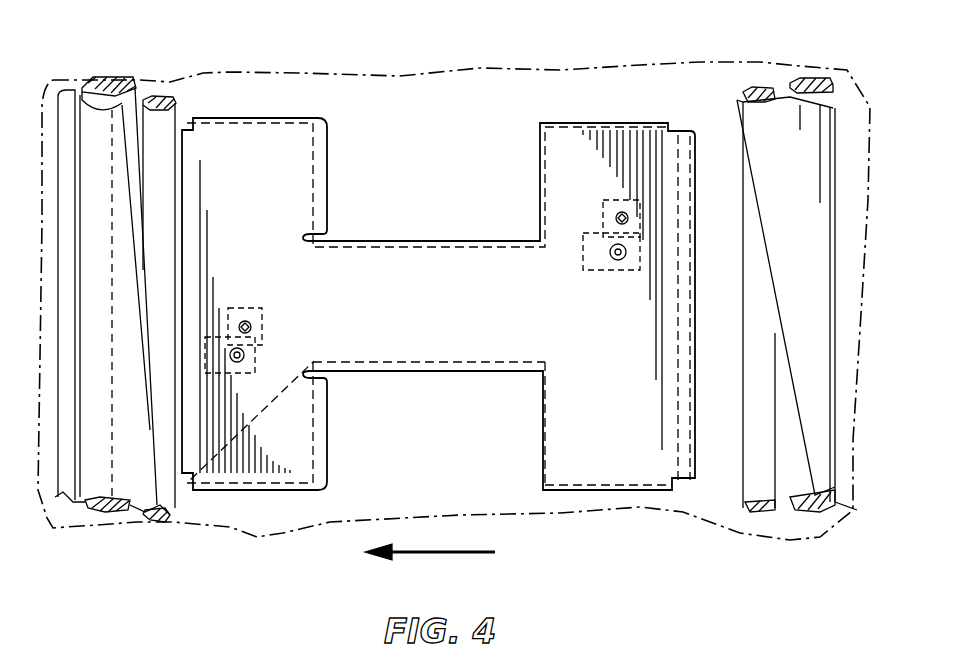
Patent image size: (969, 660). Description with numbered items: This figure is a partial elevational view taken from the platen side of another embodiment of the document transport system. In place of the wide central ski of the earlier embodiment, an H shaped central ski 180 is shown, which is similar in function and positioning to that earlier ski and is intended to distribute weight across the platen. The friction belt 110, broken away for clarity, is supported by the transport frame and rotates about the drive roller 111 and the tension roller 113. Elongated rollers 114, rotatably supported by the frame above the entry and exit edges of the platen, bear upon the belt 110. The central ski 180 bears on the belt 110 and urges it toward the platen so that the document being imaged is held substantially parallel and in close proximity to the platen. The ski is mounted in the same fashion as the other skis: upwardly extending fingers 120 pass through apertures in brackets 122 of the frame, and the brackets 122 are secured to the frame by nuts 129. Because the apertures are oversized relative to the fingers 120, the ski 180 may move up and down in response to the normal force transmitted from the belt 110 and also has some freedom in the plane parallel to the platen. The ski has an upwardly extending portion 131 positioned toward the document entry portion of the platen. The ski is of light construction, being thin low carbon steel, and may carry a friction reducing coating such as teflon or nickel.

The friction belt 110 is at (122, 455).
The drive roller 111 is at (95, 78).
The tension roller 113 is at (815, 498).
The elongated rollers 114 is at (153, 165).
The fingers 120 is at (270, 328).
The brackets 122 is at (262, 305).
The nuts 129 is at (245, 360).
The upwardly extending portion 131 is at (690, 483).
The H shaped central ski 180 is at (558, 208).